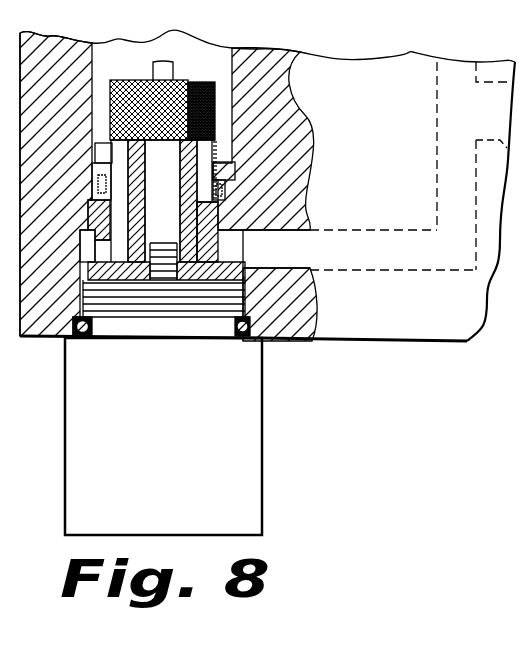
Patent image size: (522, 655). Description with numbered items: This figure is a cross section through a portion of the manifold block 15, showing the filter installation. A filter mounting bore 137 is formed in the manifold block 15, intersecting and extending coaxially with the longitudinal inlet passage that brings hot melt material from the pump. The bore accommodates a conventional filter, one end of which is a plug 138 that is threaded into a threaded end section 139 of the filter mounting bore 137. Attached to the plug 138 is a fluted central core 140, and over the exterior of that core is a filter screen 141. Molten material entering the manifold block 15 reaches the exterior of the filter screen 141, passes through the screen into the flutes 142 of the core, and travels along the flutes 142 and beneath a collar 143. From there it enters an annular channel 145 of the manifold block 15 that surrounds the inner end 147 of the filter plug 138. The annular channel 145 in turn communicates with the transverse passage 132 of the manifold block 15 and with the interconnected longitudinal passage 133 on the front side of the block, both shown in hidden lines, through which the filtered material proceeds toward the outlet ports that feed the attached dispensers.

The manifold block 15 is at (418, 341).
The transverse passage 132 is at (294, 240).
The longitudinal passage 133 is at (446, 132).
The filter mounting bore 137 is at (133, 24).
The plug 138 is at (163, 436).
The threaded end section 139 is at (155, 305).
The fluted central core 140 is at (222, 143).
The filter screen 141 is at (216, 68).
The flutes 142 is at (113, 158).
The collar 143 is at (92, 205).
The annular channel 145 is at (88, 249).
The inner end 147 is at (265, 194).